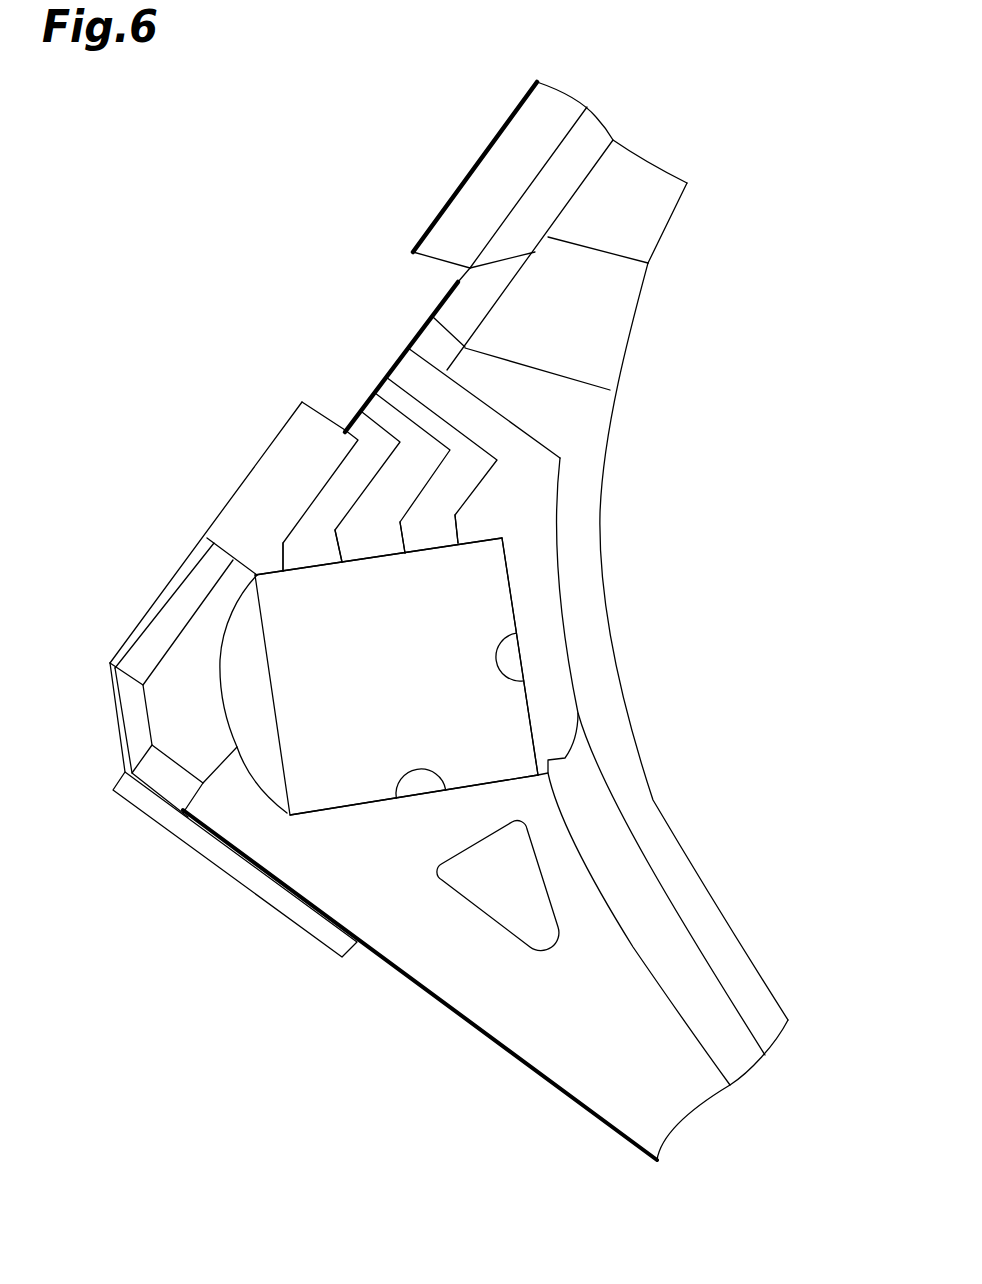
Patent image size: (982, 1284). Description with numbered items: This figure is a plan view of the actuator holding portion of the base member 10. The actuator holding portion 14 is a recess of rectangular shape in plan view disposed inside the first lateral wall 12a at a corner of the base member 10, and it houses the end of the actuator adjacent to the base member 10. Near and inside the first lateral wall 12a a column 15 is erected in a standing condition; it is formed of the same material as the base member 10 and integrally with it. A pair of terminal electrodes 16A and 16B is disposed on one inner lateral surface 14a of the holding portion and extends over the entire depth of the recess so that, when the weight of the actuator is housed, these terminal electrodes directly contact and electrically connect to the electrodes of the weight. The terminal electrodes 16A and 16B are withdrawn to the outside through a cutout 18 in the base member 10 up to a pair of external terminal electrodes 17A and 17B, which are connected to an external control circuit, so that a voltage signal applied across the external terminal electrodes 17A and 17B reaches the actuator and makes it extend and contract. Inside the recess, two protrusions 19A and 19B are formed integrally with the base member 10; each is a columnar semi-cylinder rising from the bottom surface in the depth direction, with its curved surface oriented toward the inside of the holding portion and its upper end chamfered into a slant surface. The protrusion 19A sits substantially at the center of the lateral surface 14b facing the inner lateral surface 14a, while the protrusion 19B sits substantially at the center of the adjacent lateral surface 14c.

The base member 10 is at (488, 132).
The first lateral wall 12a is at (178, 683).
The actuator holding portion 14 is at (295, 658).
The inner lateral surface 14a is at (380, 558).
The lateral surface 14b is at (327, 805).
The lateral surface 14c is at (532, 732).
The column 15 is at (478, 923).
The terminal electrode 16A is at (443, 550).
The terminal electrode 16B is at (318, 573).
The external terminal electrode 17A is at (377, 380).
The external terminal electrode 17B is at (347, 422).
The cutout 18 is at (317, 410).
The protrusion 19A is at (407, 768).
The protrusion 19B is at (498, 658).